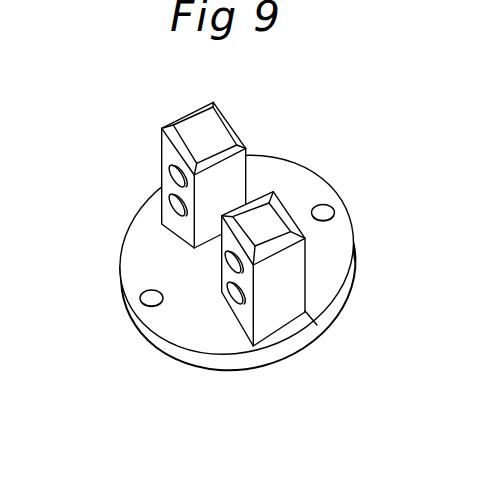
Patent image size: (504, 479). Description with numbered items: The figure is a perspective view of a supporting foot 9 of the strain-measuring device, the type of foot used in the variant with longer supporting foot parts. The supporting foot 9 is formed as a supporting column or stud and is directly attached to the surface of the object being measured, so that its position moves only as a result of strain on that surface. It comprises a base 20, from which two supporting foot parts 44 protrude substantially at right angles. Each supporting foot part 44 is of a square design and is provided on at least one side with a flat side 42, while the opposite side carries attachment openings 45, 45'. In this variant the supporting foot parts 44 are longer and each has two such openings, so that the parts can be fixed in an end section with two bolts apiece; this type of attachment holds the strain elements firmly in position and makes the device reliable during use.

The supporting foot 9 is at (112, 301).
The base 20 is at (327, 297).
The flat side 42 is at (246, 122).
The supporting foot part 44 is at (195, 132).
The attachment opening 45 is at (189, 271).
The lower hole 45' is at (170, 293).